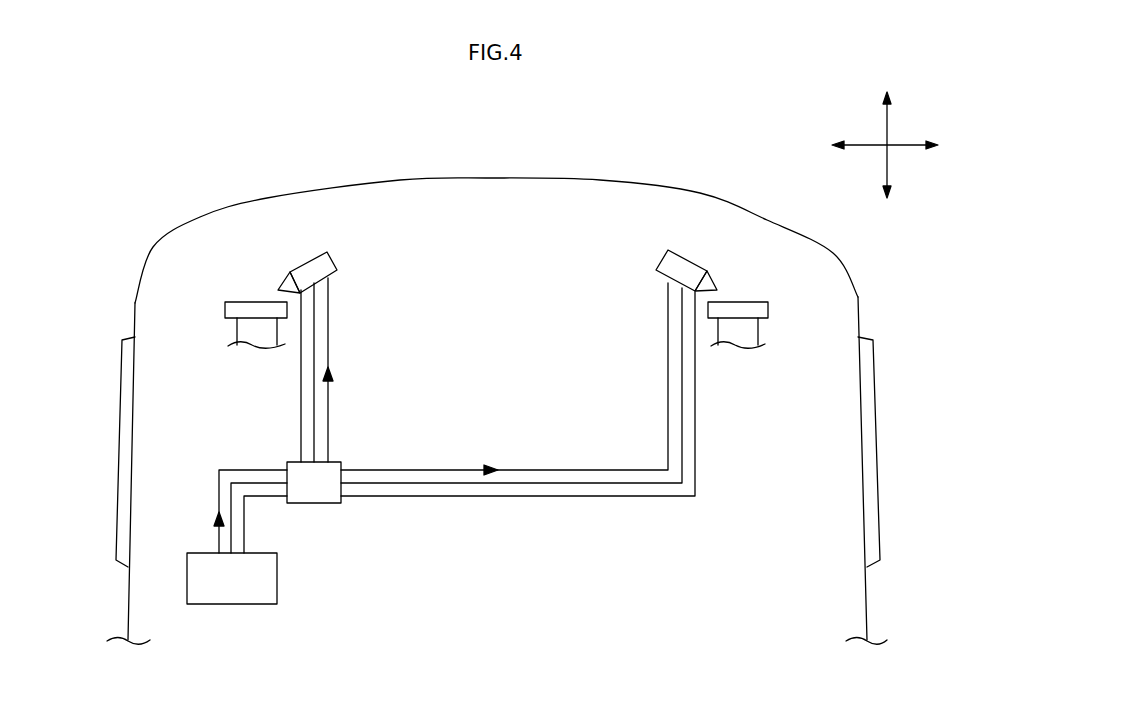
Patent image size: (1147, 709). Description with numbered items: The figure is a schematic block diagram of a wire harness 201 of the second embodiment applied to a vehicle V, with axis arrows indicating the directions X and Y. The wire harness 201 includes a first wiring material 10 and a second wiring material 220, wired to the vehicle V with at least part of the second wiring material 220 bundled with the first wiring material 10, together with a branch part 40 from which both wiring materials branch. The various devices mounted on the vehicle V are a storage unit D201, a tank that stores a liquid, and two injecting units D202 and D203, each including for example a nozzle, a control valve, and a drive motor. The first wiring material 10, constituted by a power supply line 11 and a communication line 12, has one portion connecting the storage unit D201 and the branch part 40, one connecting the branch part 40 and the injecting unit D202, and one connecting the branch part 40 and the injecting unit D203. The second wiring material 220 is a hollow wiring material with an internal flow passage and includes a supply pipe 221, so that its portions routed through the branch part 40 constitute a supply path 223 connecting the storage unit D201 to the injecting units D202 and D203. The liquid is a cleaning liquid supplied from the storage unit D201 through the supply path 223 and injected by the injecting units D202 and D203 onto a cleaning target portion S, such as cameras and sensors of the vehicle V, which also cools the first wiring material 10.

The wire harness 201 is at (487, 372).
The vehicle V is at (585, 178).
The branch part 40 is at (345, 461).
The storage unit D201 is at (232, 605).
The injecting unit D202 is at (309, 256).
The injecting unit D203 is at (688, 256).
The cleaning target portion S is at (250, 300).
The supply pipe 221 is at (425, 415).
The second wiring material 220 is at (330, 336).
The first wiring material 10 is at (245, 358).
The power supply line 11 is at (314, 372).
The communication line 12 is at (301, 417).
The supply path 223 is at (633, 515).
The X direction X is at (885, 122).
The Y direction Y is at (905, 140).